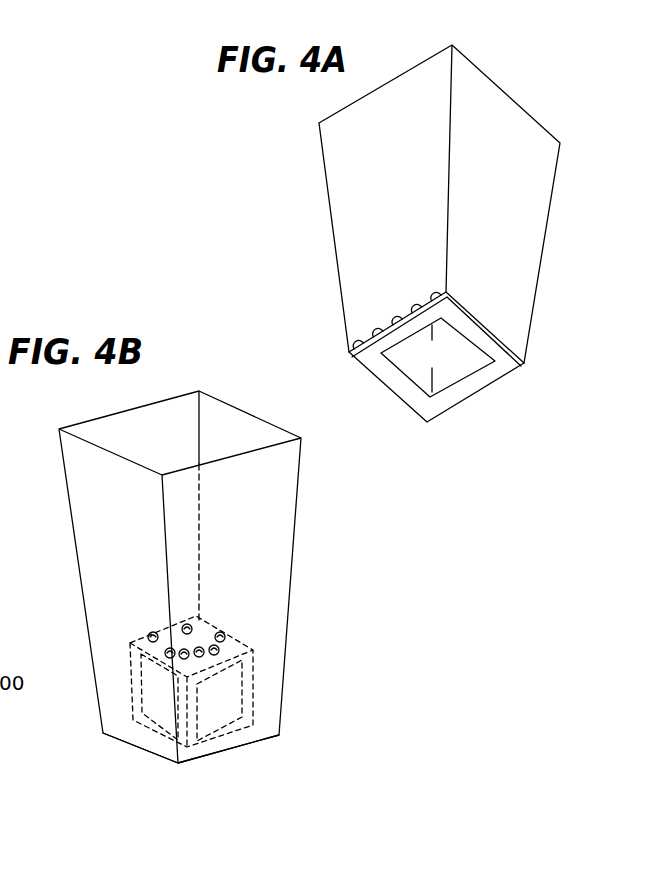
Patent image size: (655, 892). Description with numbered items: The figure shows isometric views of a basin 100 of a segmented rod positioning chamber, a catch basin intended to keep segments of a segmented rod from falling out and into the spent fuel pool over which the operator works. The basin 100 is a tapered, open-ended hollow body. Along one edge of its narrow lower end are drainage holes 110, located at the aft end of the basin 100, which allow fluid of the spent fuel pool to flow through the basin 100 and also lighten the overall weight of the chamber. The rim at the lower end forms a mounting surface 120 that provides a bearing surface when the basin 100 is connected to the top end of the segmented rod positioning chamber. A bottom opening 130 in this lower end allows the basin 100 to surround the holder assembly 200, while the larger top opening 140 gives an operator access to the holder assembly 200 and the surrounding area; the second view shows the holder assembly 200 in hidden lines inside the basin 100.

In FIG. 4A, the basin 100 is at (564, 200).
In FIG. 4B, the basin 100 is at (330, 546).
In FIG. 4A, the drainage holes 110 is at (380, 308).
In FIG. 4B, the drainage holes 110 is at (299, 717).
In FIG. 4A, the mounting surface 120 is at (502, 368).
In FIG. 4A, the bottom opening 130 is at (419, 369).
In FIG. 4B, the top opening 140 is at (149, 448).
In FIG. 4B, the holder assembly 200 is at (267, 668).